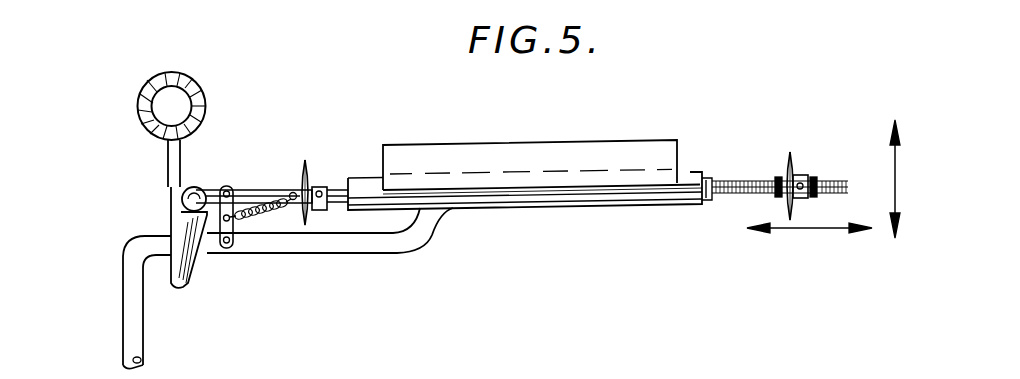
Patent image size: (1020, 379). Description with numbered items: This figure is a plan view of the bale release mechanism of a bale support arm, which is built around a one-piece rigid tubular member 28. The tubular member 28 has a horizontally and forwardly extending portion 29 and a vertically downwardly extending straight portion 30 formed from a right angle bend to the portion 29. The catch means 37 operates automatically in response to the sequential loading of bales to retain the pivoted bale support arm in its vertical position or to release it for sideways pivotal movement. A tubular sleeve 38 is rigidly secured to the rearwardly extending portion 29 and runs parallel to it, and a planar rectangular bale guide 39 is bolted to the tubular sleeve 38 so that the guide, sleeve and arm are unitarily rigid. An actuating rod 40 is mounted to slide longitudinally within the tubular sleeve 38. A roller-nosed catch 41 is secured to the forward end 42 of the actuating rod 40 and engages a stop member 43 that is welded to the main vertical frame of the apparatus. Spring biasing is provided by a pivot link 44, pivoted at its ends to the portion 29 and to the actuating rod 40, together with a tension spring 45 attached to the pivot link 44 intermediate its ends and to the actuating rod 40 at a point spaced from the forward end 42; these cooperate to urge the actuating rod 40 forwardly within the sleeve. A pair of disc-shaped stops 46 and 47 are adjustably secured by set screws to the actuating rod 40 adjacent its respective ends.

The rigid tubular member 28 is at (134, 225).
The horizontally and forwardly extending portion 29 is at (400, 248).
The vertically downwardly extending straight portion 30 is at (132, 320).
The catch means 37 is at (560, 128).
The tubular sleeve 38 is at (687, 182).
The bale guide 39 is at (443, 153).
The actuating rod 40 is at (747, 182).
The roller-nosed catch 41 is at (197, 193).
The forward end 42 is at (245, 190).
The stop member 43 is at (168, 222).
The pivot link 44 is at (234, 250).
The tension spring 45 is at (269, 212).
The disc-shaped stop 46 is at (312, 172).
The disc-shaped stop 47 is at (793, 167).